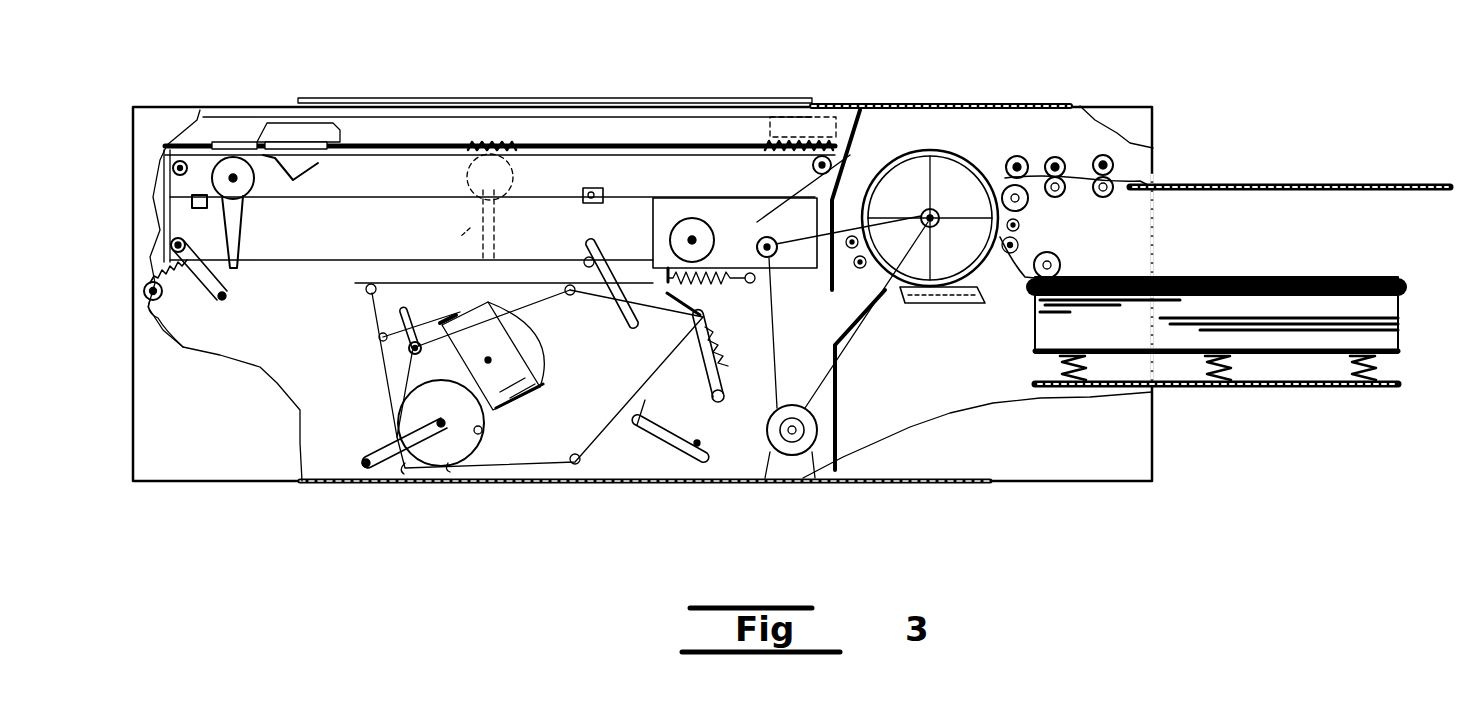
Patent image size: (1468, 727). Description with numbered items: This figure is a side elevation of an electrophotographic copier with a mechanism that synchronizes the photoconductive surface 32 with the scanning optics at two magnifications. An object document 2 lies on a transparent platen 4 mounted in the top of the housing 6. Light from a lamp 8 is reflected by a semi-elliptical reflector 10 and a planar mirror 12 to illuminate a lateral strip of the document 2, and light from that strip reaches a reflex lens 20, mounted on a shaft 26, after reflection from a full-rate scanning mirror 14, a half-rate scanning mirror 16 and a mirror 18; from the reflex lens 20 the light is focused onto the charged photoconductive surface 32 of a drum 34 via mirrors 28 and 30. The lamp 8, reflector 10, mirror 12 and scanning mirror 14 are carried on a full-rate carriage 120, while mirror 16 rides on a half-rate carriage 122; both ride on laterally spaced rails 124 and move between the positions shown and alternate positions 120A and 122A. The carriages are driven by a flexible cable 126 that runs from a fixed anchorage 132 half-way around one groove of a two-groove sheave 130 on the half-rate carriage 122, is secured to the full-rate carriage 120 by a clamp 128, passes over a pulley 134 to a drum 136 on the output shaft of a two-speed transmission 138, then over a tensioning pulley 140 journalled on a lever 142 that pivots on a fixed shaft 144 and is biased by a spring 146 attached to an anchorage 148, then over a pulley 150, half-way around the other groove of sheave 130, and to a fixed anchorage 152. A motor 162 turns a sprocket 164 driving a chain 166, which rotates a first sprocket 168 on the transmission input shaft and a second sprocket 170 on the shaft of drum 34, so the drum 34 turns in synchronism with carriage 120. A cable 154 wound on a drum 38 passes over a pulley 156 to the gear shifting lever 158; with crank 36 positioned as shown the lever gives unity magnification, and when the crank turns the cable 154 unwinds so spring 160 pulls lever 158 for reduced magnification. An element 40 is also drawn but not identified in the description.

The object document 2 is at (783, 97).
The transparent platen 4 is at (437, 117).
The housing 6 is at (227, 462).
The lamp 8 is at (750, 100).
The semi-elliptical reflector 10 is at (765, 130).
The planar mirror 12 is at (845, 128).
The full-rate scanning mirror 14 is at (805, 168).
The half-rate scanning mirror 16 is at (496, 215).
The mirror 18 is at (594, 247).
The reflex lens 20 is at (549, 398).
The shaft 26 is at (490, 360).
The mirror 28 is at (724, 355).
The mirror 30 is at (645, 425).
The photoconductive surface 32 is at (990, 283).
The drum 34 is at (963, 160).
The crank 36 is at (377, 483).
The drum 38 is at (449, 470).
The link 40 is at (393, 380).
The full-rate carriage 120 is at (257, 147).
The alternate position of full-rate carriage 120A is at (795, 160).
The half-rate carriage 122 is at (247, 218).
The alternate position of half-rate carriage 122A is at (470, 228).
The rails 124 is at (574, 112).
The flexible cable 126 is at (406, 199).
The clamp 128 is at (300, 172).
The two-groove sheave 130 is at (222, 213).
The fixed anchorage 132 is at (585, 203).
The pulley 134 is at (848, 160).
The drum 136 is at (697, 210).
The two-speed transmission 138 is at (653, 215).
The tensioning pulley 140 is at (170, 237).
The lever 142 is at (203, 295).
The fixed shaft 144 is at (253, 293).
The spring 146 is at (157, 270).
The anchorage 148 is at (150, 310).
The pulley 150 is at (172, 162).
The fixed anchorage 152 is at (192, 202).
The cable 154 is at (372, 318).
The pulley 156 is at (366, 290).
The gear shifting lever 158 is at (656, 318).
The spring 160 is at (737, 282).
The motor 162 is at (778, 480).
The sprocket 164 is at (812, 427).
The chain 166 is at (770, 390).
The first sprocket 168 is at (778, 258).
The second sprocket 170 is at (950, 232).